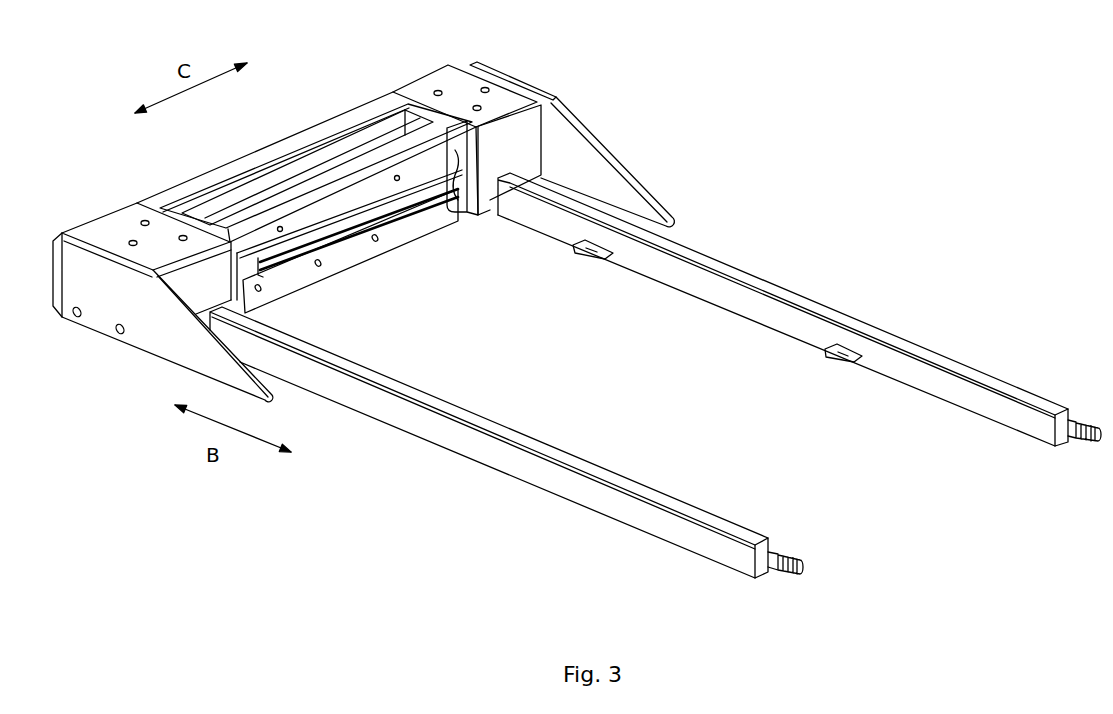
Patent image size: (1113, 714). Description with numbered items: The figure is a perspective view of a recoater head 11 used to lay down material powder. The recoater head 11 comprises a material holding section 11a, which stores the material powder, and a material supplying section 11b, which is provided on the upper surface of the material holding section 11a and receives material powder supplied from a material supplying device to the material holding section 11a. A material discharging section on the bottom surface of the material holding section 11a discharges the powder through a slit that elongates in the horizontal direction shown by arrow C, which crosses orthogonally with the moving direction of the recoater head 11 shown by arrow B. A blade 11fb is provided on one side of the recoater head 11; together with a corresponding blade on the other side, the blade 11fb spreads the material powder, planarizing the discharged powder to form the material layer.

The recoater head 11 is at (331, 110).
The material holding section 11a is at (228, 192).
The material supplying section 11b is at (289, 168).
The blade 11fb is at (348, 272).